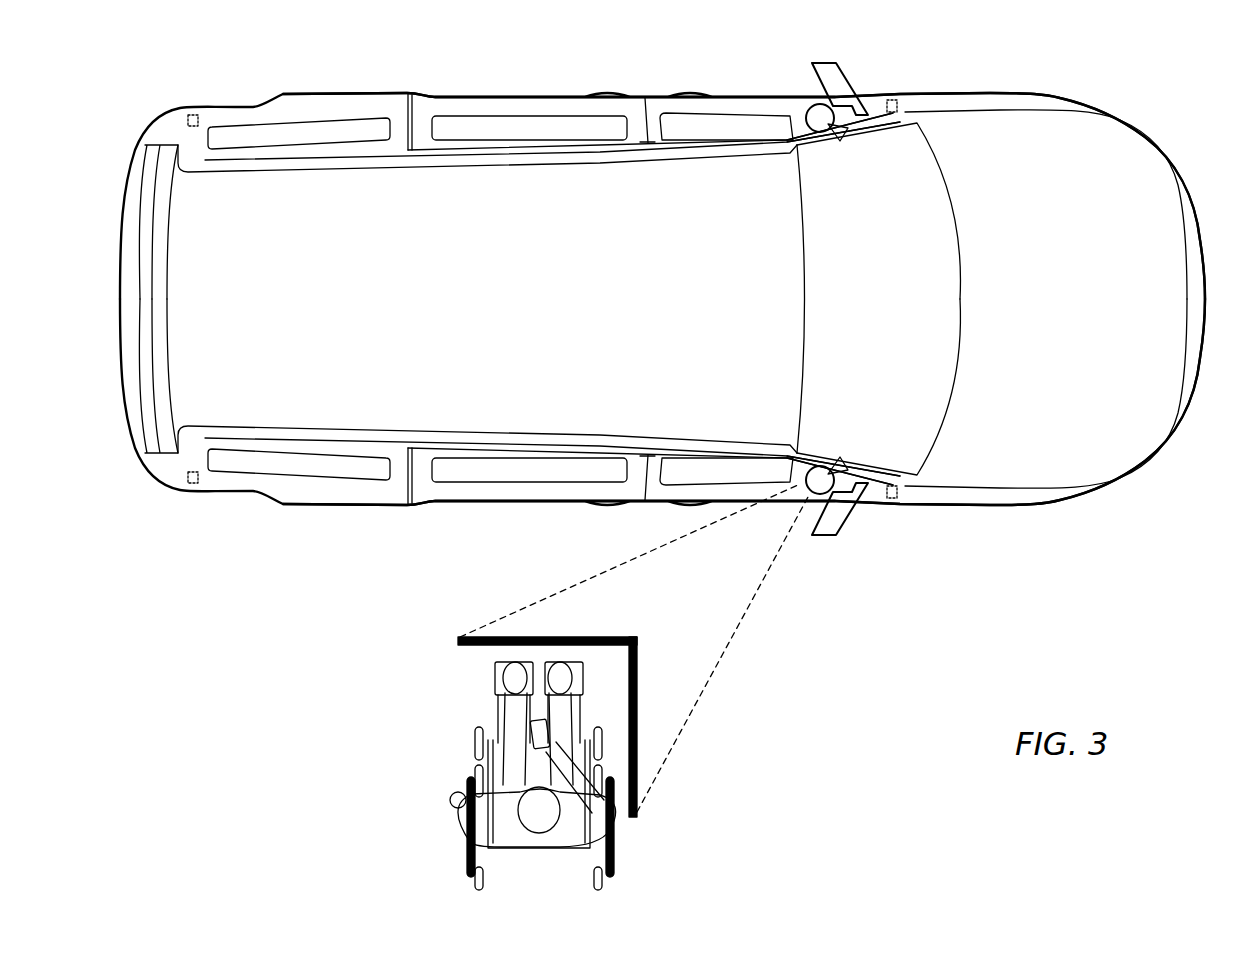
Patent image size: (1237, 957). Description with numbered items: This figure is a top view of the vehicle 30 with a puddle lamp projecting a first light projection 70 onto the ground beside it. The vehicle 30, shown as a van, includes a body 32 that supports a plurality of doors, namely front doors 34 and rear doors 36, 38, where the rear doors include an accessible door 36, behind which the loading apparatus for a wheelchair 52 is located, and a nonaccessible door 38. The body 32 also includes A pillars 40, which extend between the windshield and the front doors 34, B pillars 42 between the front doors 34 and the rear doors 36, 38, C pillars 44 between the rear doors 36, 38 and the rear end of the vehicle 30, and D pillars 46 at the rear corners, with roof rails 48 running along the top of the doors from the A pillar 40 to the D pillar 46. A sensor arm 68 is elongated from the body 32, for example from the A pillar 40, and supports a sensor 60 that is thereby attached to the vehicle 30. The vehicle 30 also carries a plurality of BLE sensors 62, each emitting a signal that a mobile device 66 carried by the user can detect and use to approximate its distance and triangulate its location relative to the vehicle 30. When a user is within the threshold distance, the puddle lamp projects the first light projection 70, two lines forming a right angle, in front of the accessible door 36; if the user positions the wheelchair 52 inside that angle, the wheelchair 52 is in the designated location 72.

The vehicle 30 is at (1154, 65).
The body 32 is at (1035, 94).
The front door 34 is at (738, 96).
The accessible door 36 is at (520, 502).
The nonaccessible door 38 is at (520, 96).
The A pillar 40 is at (880, 130).
The B pillar 42 is at (645, 128).
The C pillar 44 is at (406, 130).
The D pillar 46 is at (218, 142).
The roof rail 48 is at (527, 160).
The wheelchair 52 is at (463, 843).
The sensor 60 is at (805, 128).
The BLE sensor 62 is at (192, 112).
The mobile device 66 is at (550, 712).
The sensor arm 68 is at (838, 134).
The first light projection 70 is at (608, 636).
The designated location 72 is at (457, 686).